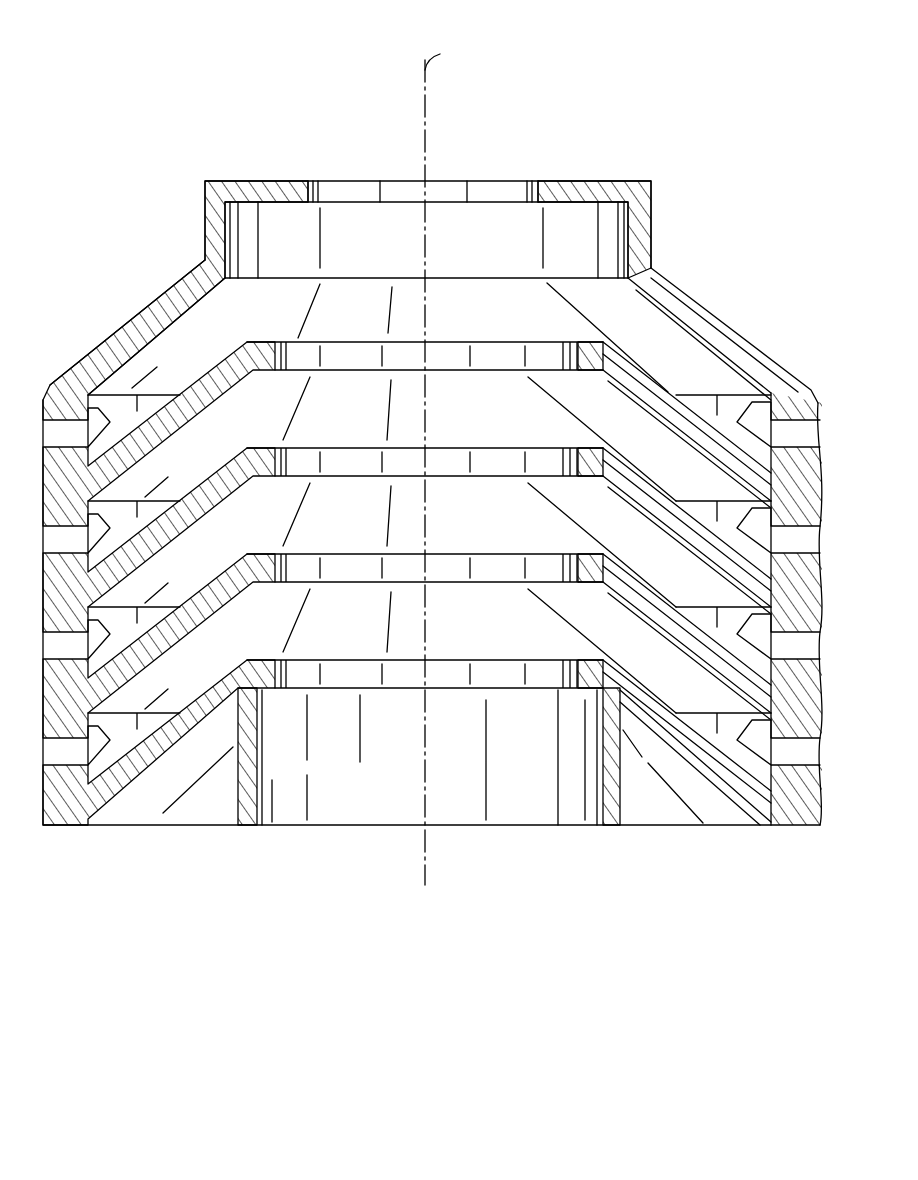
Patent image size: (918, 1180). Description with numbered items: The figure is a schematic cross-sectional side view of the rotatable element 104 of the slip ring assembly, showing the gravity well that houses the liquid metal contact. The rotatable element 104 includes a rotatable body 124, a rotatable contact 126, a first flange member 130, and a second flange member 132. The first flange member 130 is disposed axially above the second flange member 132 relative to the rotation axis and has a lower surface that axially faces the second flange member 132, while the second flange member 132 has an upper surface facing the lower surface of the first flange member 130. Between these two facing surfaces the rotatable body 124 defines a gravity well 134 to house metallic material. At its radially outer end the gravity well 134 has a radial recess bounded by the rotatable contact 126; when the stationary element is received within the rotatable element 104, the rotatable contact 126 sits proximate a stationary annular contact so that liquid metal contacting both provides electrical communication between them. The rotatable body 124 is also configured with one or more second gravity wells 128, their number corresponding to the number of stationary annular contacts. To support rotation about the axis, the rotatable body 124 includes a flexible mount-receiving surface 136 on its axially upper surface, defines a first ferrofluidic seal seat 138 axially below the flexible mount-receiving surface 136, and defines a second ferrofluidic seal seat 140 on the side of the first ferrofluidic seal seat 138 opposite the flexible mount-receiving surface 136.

The rotatable element 104 is at (200, 108).
The rotatable body 124 is at (268, 181).
The rotatable contact 126 is at (88, 358).
The second gravity well 128 is at (212, 467).
The first flange member 130 is at (137, 314).
The second flange member 132 is at (212, 385).
The gravity well 134 is at (208, 357).
The flexible mount-receiving surface 136 is at (236, 181).
The first ferrofluidic seal seat 138 is at (242, 233).
The second ferrofluidic seal seat 140 is at (262, 697).